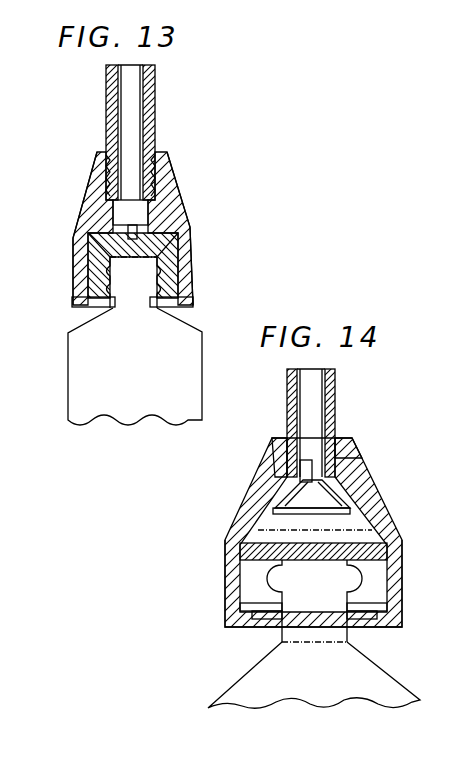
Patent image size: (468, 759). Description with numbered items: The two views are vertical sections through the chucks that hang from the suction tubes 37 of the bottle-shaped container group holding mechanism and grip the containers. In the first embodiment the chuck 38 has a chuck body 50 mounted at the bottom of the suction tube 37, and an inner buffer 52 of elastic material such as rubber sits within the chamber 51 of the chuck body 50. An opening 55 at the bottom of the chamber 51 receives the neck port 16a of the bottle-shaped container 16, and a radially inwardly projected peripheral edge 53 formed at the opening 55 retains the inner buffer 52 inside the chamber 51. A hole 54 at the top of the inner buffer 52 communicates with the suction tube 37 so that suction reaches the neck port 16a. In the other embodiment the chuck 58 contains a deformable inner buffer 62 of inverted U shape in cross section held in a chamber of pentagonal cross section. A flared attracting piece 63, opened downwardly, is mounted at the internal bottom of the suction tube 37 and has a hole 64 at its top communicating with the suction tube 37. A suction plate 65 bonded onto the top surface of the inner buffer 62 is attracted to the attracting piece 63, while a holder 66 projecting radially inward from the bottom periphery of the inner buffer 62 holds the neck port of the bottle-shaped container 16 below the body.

In FIG. 13, the bottle-shaped container 16 is at (72, 390).
In FIG. 14, the bottle-shaped container 16 is at (238, 690).
In FIG. 13, the neck port 16a is at (112, 268).
In FIG. 14, the neck port 16a is at (288, 630).
In FIG. 13, the suction tube 37 is at (156, 92).
In FIG. 14, the suction tube 37 is at (337, 381).
In FIG. 13, the chuck 38 is at (87, 175).
In FIG. 13, the chuck body 50 is at (177, 186).
In FIG. 13, the chamber 51 is at (190, 226).
In FIG. 13, the inner buffer 52 is at (173, 261).
In FIG. 13, the peripheral edge 53 is at (90, 310).
In FIG. 13, the hole 54 is at (113, 222).
In FIG. 13, the opening 55 is at (167, 309).
In FIG. 14, the chuck 58 is at (392, 502).
In FIG. 14, the inner buffer 62 is at (242, 577).
In FIG. 14, the attracting piece 63 is at (358, 456).
In FIG. 14, the hole 64 is at (278, 460).
In FIG. 14, the suction plate 65 is at (388, 522).
In FIG. 14, the holder 66 is at (373, 597).